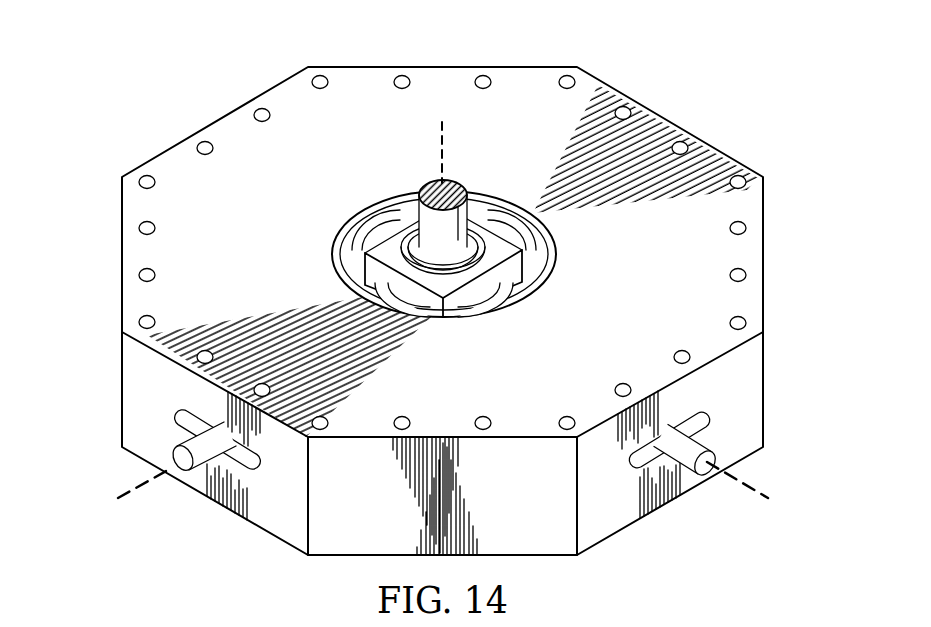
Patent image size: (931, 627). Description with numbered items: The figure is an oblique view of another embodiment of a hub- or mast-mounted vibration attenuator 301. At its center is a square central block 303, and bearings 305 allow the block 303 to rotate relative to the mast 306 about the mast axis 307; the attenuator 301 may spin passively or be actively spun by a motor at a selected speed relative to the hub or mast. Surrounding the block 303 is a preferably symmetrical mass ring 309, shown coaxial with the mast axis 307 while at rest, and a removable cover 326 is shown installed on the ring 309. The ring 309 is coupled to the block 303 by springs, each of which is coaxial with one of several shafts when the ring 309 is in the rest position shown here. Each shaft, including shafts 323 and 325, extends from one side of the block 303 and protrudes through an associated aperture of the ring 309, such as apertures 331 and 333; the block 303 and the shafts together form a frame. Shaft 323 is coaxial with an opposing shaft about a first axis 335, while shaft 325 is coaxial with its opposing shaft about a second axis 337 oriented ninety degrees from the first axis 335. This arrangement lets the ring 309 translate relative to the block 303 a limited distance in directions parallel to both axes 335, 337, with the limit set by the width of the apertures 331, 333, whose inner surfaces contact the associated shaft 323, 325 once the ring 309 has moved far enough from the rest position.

The attenuator 301 is at (674, 86).
The square central block 303 is at (513, 276).
The bearings 305 is at (452, 273).
The mast 306 is at (424, 214).
The mast axis 307 is at (449, 131).
The mass ring 309 is at (131, 358).
The shaft 323 is at (708, 444).
The shaft 325 is at (172, 445).
The removable cover 326 is at (176, 158).
The aperture 331 is at (709, 427).
The aperture 333 is at (177, 425).
The first axis 335 is at (753, 497).
The second axis 337 is at (128, 500).